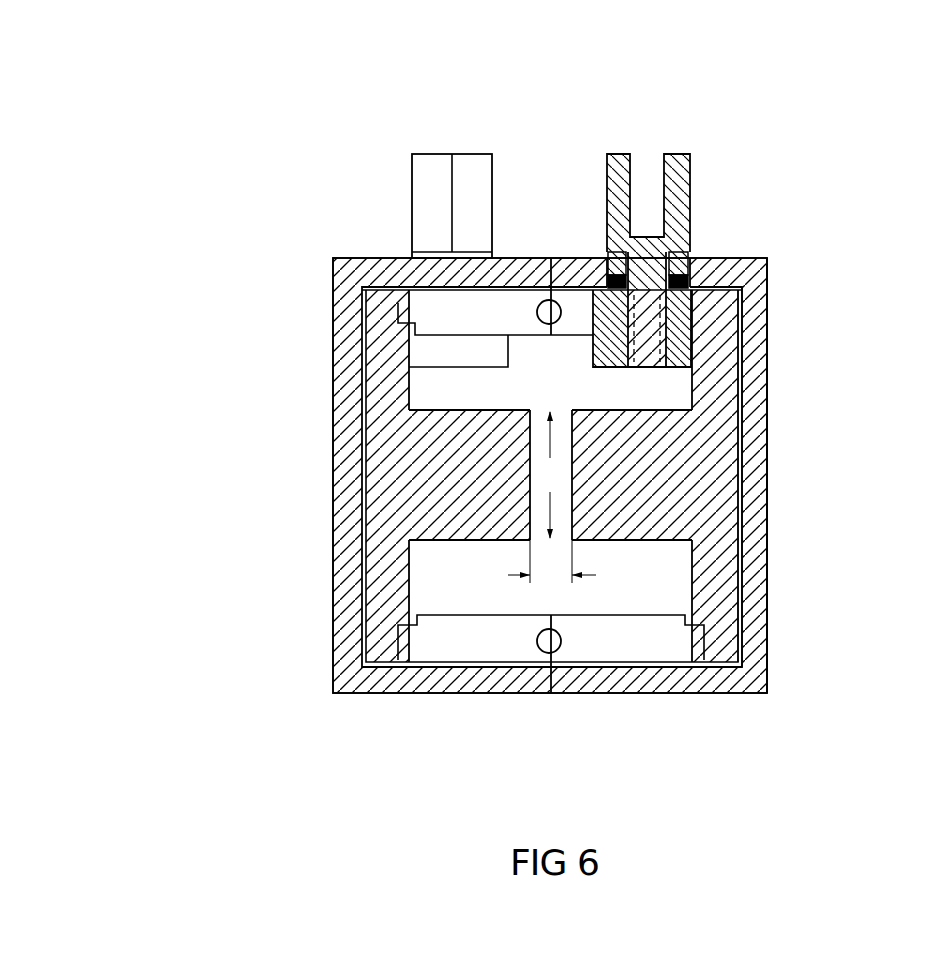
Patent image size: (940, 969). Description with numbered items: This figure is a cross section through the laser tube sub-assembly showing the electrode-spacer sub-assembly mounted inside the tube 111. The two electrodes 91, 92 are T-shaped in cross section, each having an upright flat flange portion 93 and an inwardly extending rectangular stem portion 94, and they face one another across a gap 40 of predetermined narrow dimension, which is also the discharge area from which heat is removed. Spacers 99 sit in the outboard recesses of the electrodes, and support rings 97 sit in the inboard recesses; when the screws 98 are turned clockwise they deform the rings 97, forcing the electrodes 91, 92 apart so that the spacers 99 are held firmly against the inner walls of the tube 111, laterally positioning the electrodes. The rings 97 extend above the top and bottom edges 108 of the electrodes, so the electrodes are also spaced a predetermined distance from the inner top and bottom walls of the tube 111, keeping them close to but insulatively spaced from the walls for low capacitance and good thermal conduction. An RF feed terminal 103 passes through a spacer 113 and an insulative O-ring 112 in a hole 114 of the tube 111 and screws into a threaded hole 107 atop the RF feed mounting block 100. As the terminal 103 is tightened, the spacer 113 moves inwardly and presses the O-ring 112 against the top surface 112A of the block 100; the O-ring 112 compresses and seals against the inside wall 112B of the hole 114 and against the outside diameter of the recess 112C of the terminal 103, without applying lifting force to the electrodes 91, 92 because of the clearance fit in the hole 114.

The gap 40 is at (547, 503).
The electrode 91 is at (367, 470).
The electrode 92 is at (760, 458).
The flange portion 93 is at (390, 370).
The stem portion 94 is at (447, 463).
The support ring 97 is at (433, 308).
The screw 98 is at (540, 300).
The spacer 99 is at (353, 313).
The RF feed mounting block 100 is at (485, 352).
The RF feed terminal 103 is at (648, 153).
The threaded hole 107 is at (652, 338).
The top and bottom edges 108 is at (370, 290).
The tube 111 is at (745, 382).
The insulative O-ring 112 is at (712, 258).
The top surface 112A is at (625, 255).
The inside wall 112B is at (617, 258).
The recess 112C is at (683, 268).
The spacer 113 is at (700, 260).
The hole 114 is at (618, 268).